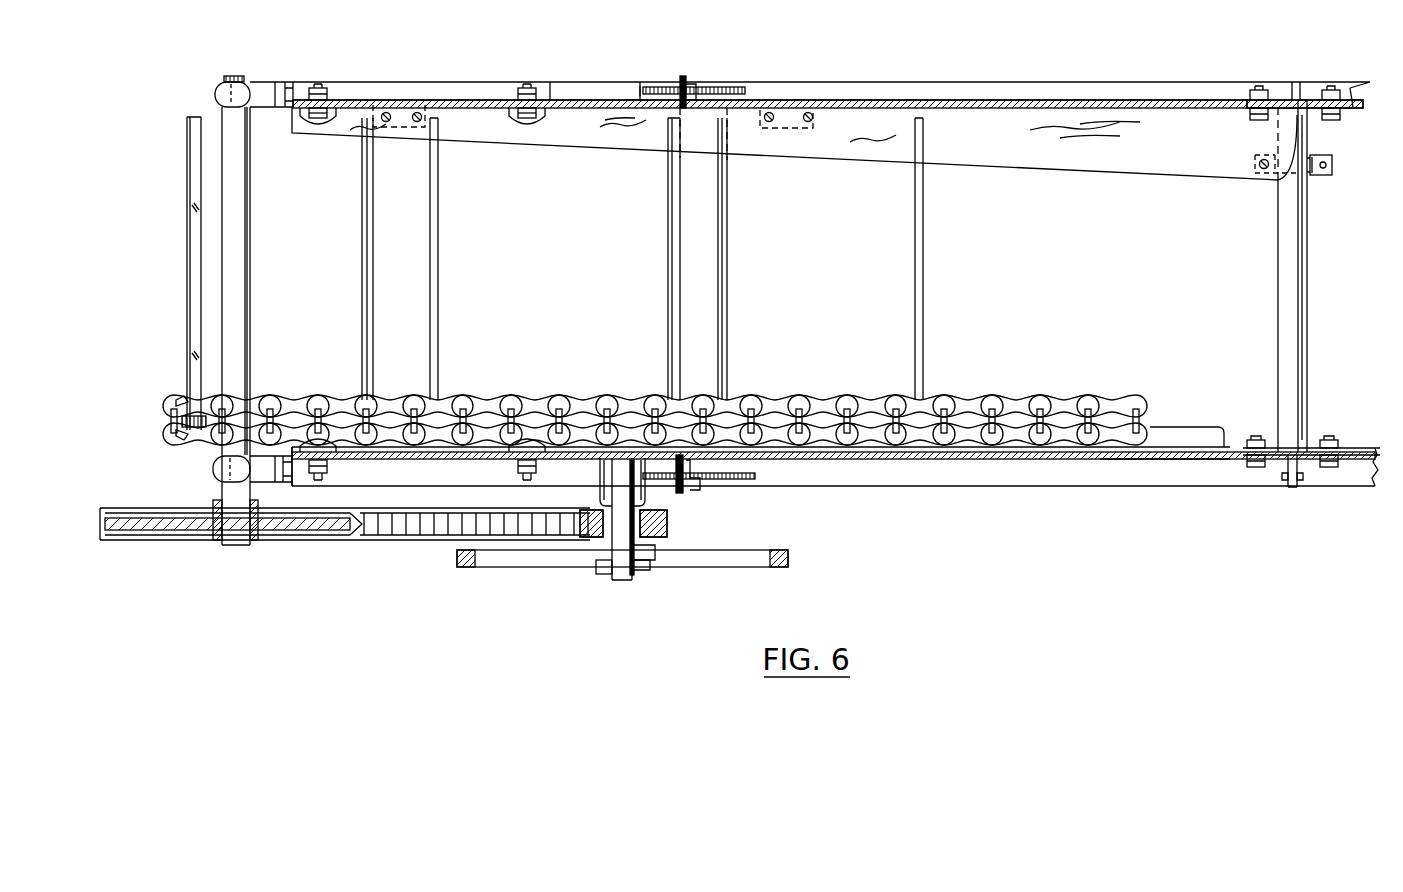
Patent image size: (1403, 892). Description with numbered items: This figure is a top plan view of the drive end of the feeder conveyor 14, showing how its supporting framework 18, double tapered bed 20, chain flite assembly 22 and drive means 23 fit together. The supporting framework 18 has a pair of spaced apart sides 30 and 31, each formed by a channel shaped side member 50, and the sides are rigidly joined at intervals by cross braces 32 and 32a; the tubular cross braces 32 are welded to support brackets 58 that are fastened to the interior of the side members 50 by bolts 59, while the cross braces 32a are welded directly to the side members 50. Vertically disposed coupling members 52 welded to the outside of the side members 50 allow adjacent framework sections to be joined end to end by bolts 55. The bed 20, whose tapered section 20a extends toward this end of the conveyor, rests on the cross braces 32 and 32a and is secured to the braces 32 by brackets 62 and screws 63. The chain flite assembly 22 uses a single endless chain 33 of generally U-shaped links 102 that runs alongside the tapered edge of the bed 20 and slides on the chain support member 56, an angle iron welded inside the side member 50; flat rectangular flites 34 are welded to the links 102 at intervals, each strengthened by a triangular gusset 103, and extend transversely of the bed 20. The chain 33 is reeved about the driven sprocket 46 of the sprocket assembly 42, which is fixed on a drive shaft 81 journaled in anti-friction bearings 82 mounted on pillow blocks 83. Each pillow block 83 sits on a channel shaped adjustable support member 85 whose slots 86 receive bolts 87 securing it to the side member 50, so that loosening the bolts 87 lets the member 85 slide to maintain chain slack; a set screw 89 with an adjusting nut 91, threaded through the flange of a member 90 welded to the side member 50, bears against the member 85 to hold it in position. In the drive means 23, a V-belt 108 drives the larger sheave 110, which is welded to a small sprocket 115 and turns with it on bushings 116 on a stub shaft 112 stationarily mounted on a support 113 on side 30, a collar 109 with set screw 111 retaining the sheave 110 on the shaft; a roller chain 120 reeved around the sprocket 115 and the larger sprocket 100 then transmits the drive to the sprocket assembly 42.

The feeder conveyor 14 is at (1343, 488).
The supporting framework 18 is at (1049, 496).
The double tapered bed 20 is at (1222, 165).
The tapered section 20a is at (1112, 165).
The chain flite assembly 22 is at (1145, 392).
The drive means 23 is at (181, 475).
The side 30 is at (1137, 470).
The side 31 is at (1196, 92).
The cross brace 32 is at (1307, 250).
The cross brace 32a is at (373, 195).
The chain 33 is at (993, 396).
The flite 34 is at (187, 197).
The sprocket assembly 42 is at (251, 259).
The driven sprocket 46 is at (180, 420).
The side member 50 is at (1348, 100).
The coupling member 52 is at (1293, 488).
The bolt 55 is at (1284, 480).
The chain support member 56 is at (1200, 427).
The support bracket 58 is at (1340, 112).
The bolt 59 is at (1331, 120).
The bracket 62 is at (1320, 176).
The screw 63 is at (415, 124).
The drive shaft 81 is at (246, 345).
The anti-friction bearing 82 is at (226, 84).
The pillow block 83 is at (262, 90).
The adjustable support member 85 is at (430, 100).
The slot 86 is at (345, 102).
The bolt 87 is at (322, 88).
The set screw 89 is at (745, 90).
The member 90 is at (684, 85).
The adjusting nut 91 is at (692, 88).
The sprocket 100 is at (298, 541).
The link 102 is at (535, 402).
The gusset 103 is at (182, 385).
The V-belt 108 is at (790, 558).
The collar 109 is at (652, 572).
The sheave 110 is at (648, 560).
The set screw 111 is at (600, 570).
The stub shaft 112 is at (622, 574).
The support 113 is at (600, 478).
The sprocket 115 is at (590, 535).
The bushing 116 is at (660, 545).
The roller chain 120 is at (425, 541).